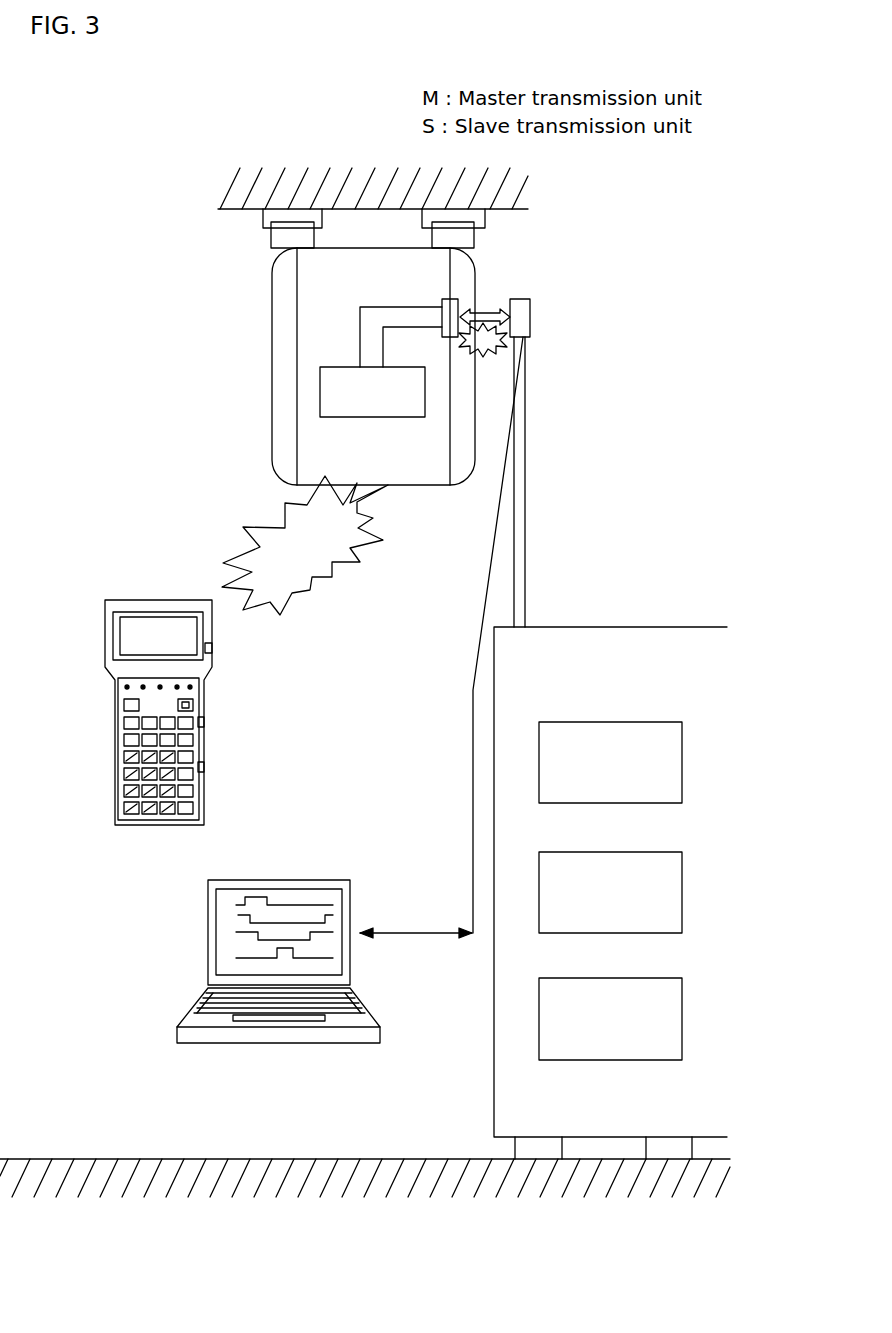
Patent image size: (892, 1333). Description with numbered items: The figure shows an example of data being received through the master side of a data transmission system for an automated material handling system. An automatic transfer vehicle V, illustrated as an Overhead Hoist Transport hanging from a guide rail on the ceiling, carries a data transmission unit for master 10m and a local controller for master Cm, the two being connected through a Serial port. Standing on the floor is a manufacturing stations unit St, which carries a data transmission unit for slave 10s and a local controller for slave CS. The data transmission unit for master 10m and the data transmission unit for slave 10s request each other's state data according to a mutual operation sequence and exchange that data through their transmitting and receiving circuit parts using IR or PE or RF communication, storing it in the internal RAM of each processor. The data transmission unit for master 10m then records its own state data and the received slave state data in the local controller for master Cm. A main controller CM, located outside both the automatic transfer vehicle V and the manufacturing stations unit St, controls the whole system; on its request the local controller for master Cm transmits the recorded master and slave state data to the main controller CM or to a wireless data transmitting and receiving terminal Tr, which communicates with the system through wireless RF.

The automatic transfer vehicle V is at (272, 336).
The local controller for master Cm is at (323, 388).
The serial port Serial is at (412, 347).
The data transmission unit for master 10m is at (459, 300).
The data transmission unit for slave 10s is at (530, 316).
The IR communication IR is at (487, 313).
The photoelectric signal PE is at (483, 340).
The wireless RF is at (305, 545).
The wireless data transmitting and receiving terminal Tr is at (107, 628).
The main controller CM is at (208, 926).
The manufacturing stations unit St is at (686, 668).
The local controller for slave CS is at (610, 762).